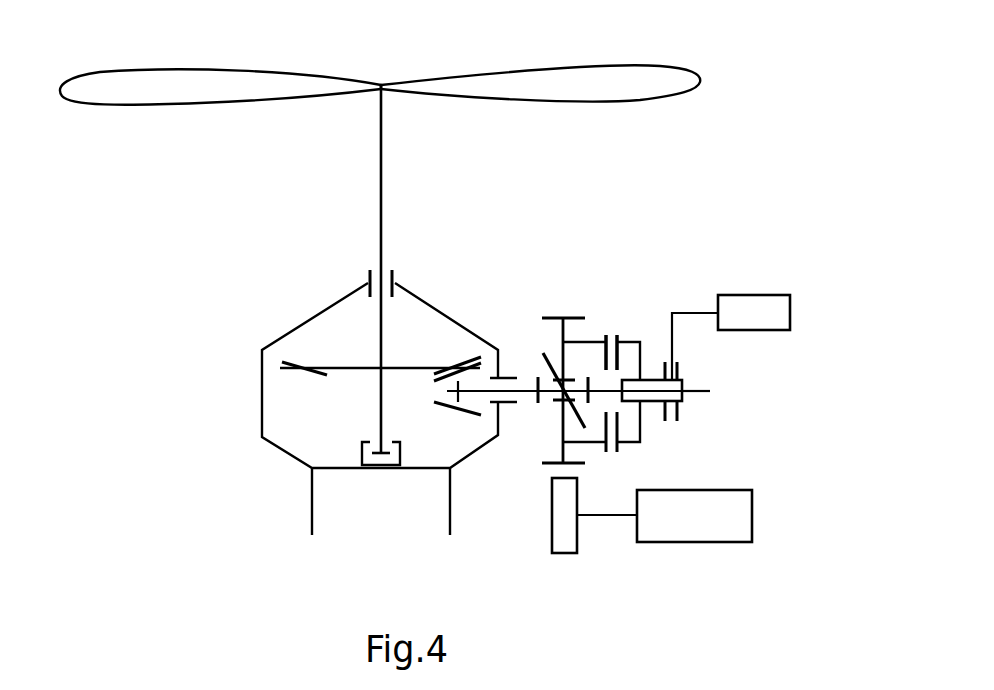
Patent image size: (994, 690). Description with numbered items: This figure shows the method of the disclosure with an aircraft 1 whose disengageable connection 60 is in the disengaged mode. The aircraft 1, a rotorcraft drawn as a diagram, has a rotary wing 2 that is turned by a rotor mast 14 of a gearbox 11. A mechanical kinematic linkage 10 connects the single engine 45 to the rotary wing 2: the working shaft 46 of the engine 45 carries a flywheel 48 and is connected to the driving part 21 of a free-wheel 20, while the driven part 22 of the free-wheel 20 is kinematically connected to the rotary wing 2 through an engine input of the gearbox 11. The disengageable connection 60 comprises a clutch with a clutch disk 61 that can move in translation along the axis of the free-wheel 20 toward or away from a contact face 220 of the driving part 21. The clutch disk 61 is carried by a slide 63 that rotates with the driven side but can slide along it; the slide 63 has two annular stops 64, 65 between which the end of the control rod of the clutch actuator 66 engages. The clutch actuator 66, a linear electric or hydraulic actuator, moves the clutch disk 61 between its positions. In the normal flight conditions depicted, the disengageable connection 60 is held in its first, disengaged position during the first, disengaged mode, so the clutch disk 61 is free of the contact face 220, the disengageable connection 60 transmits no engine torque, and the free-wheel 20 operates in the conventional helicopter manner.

The aircraft 1 is at (198, 229).
The rotary wing 2 is at (713, 35).
The rotor mast 14 is at (382, 158).
The gearbox 11 is at (467, 328).
The mechanical kinematic linkage 10 is at (541, 238).
The free-wheel 20 is at (528, 332).
The driving part 21 is at (563, 318).
The driven part 22 is at (546, 402).
The contact face 220 is at (613, 333).
The clutch disk 61 is at (618, 334).
The disengageable connection 60 is at (655, 316).
The slide 63 is at (676, 383).
The annular stop 64 is at (680, 411).
The annular stop 65 is at (668, 412).
The clutch actuator 66 is at (731, 337).
The engine 45 is at (694, 516).
The working shaft 46 is at (605, 515).
The flywheel 48 is at (563, 553).